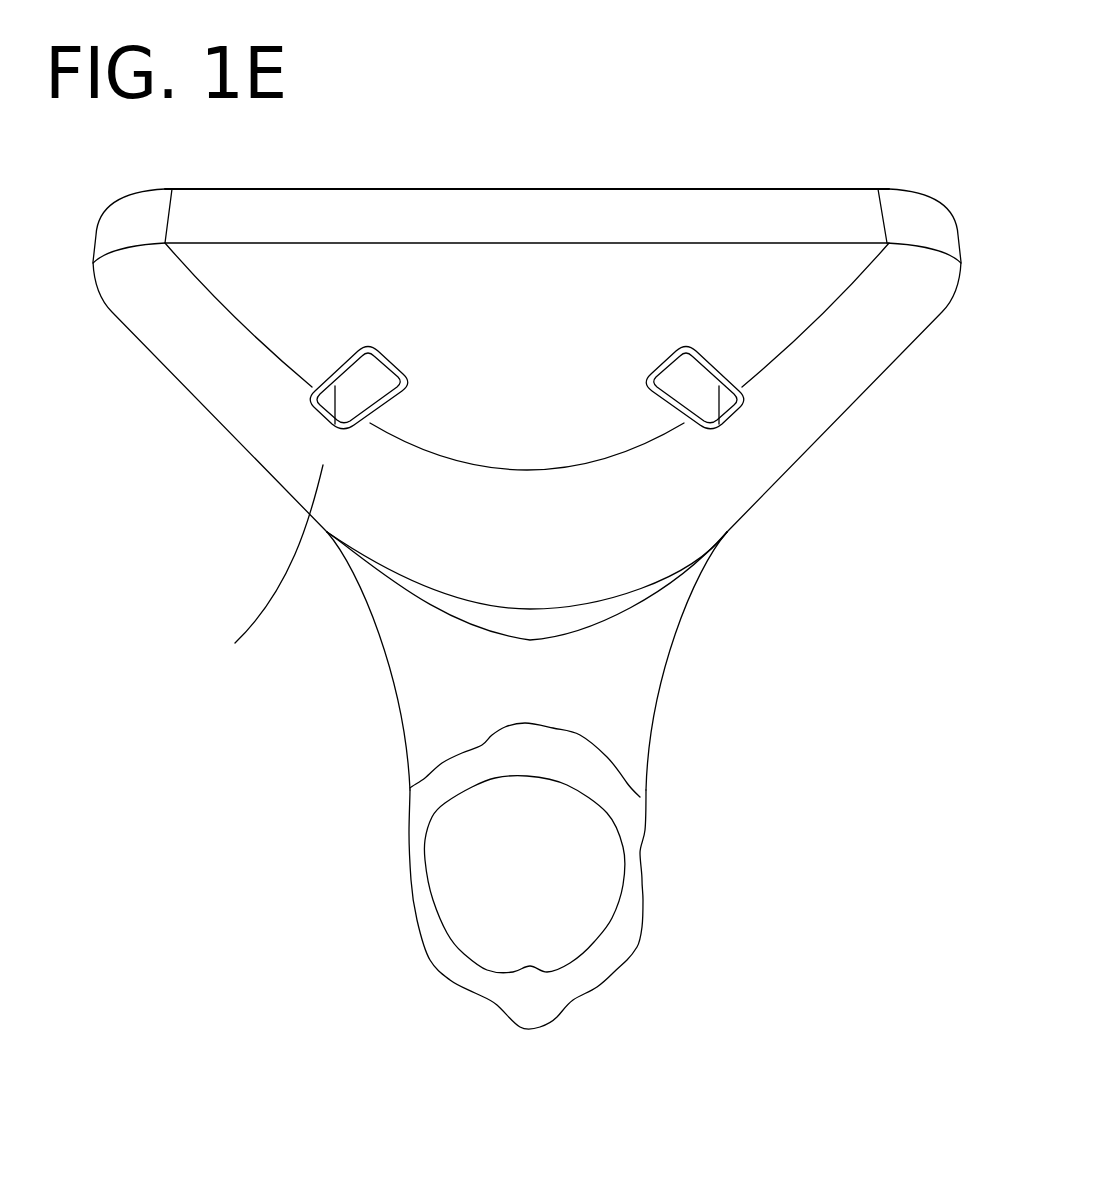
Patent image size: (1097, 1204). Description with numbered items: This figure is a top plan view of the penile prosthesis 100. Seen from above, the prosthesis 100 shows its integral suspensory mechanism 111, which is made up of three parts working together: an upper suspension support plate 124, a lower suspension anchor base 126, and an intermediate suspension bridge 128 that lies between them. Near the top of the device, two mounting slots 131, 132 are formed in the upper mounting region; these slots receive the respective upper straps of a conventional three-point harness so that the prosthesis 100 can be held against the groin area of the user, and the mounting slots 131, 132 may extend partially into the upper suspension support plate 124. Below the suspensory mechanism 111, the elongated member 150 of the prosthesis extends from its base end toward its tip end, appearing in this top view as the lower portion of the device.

The penile prosthesis 100 is at (845, 91).
The integral suspensory mechanism 111 is at (490, 617).
The upper suspension support plate 124 is at (743, 490).
The lower suspension anchor base 126 is at (585, 703).
The intermediate suspension bridge 128 is at (590, 607).
The mounting slot 131 is at (346, 360).
The mounting slot 132 is at (707, 350).
The elongated member 150 is at (485, 843).